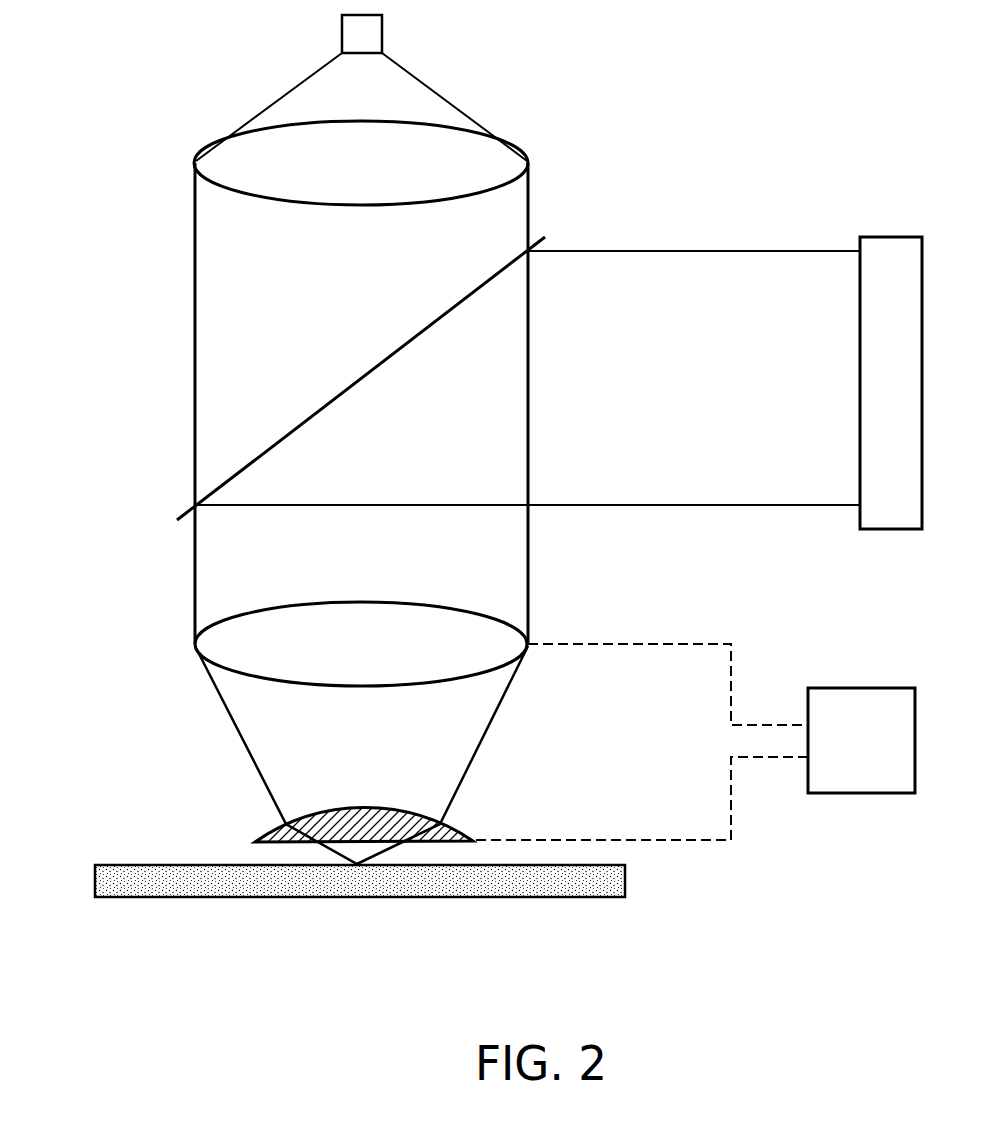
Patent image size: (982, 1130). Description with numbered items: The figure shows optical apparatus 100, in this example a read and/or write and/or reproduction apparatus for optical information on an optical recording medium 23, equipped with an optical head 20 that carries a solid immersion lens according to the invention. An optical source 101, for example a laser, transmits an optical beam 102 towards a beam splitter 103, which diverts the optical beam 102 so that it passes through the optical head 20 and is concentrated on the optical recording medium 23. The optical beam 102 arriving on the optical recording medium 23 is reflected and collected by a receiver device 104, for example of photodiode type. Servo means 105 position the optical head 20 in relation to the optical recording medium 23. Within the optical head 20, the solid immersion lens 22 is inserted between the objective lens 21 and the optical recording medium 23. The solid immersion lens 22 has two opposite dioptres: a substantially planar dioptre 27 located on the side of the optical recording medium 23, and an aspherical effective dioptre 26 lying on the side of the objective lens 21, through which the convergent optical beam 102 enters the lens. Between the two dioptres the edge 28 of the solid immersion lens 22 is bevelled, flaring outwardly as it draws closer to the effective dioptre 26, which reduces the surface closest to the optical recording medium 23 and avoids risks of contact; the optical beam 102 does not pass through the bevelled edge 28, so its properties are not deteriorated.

The optical apparatus 100 is at (632, 158).
The optical source 101 is at (892, 516).
The optical beam 102 is at (615, 490).
The beam splitter 103 is at (215, 488).
The receiver device 104 is at (376, 33).
The servo means 105 is at (863, 783).
The optical head 20 is at (137, 570).
The objective lens 21 is at (223, 625).
The solid immersion lens 22 is at (273, 827).
The optical recording medium 23 is at (555, 867).
The effective dioptre 26 is at (390, 818).
The dioptre 27 is at (362, 866).
The bevelled edge 28 is at (313, 848).